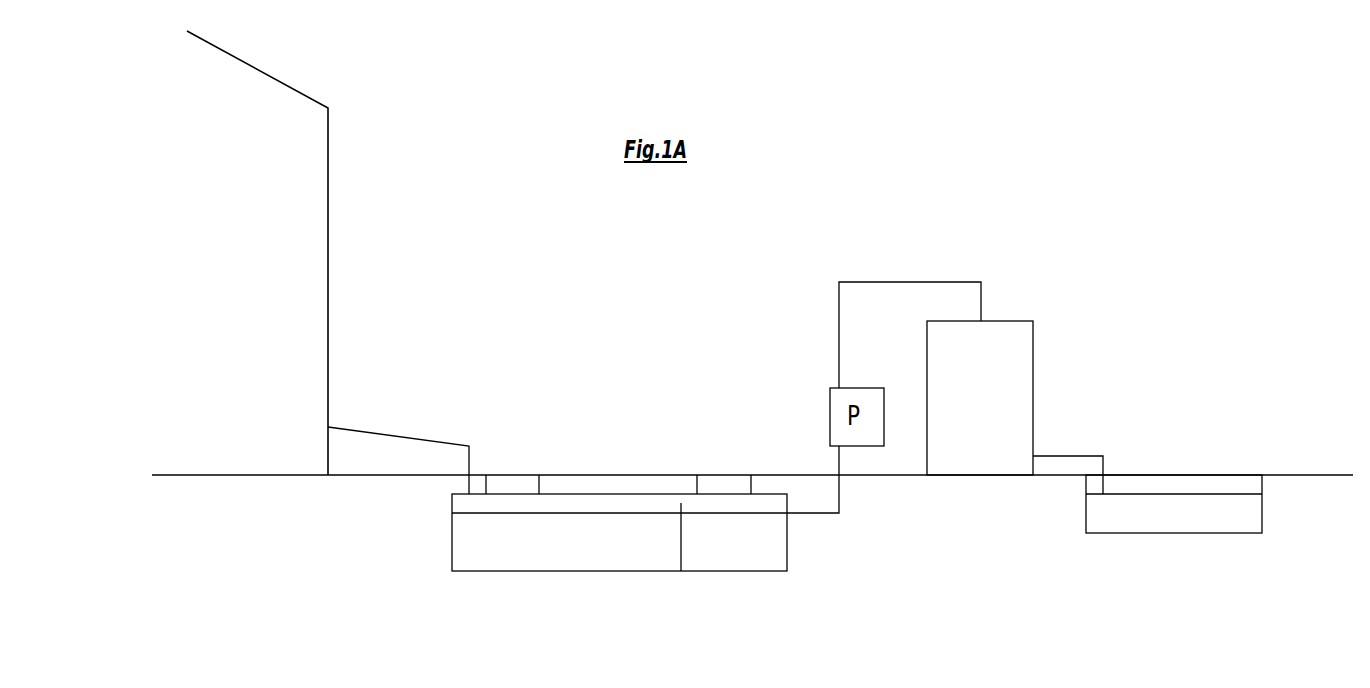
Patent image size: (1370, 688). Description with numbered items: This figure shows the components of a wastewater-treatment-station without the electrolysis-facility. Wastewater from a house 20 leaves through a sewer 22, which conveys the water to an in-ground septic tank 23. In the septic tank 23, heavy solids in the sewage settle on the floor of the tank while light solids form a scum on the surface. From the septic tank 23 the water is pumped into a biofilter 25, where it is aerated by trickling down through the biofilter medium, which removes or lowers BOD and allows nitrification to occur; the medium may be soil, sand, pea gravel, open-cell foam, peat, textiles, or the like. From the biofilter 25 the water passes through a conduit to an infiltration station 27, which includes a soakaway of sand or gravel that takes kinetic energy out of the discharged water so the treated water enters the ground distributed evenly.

The house 20 is at (238, 172).
The sewer 22 is at (398, 437).
The septic tank 23 is at (748, 562).
The biofilter 25 is at (989, 406).
The infiltration station 27 is at (1125, 518).